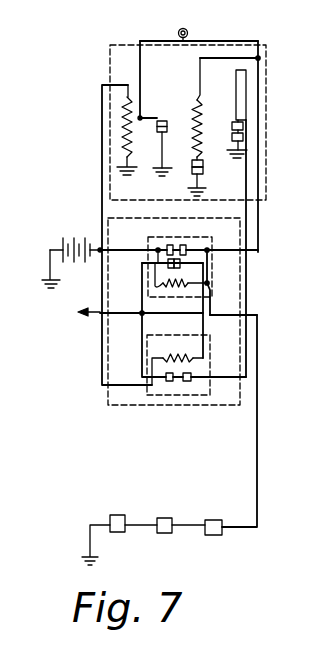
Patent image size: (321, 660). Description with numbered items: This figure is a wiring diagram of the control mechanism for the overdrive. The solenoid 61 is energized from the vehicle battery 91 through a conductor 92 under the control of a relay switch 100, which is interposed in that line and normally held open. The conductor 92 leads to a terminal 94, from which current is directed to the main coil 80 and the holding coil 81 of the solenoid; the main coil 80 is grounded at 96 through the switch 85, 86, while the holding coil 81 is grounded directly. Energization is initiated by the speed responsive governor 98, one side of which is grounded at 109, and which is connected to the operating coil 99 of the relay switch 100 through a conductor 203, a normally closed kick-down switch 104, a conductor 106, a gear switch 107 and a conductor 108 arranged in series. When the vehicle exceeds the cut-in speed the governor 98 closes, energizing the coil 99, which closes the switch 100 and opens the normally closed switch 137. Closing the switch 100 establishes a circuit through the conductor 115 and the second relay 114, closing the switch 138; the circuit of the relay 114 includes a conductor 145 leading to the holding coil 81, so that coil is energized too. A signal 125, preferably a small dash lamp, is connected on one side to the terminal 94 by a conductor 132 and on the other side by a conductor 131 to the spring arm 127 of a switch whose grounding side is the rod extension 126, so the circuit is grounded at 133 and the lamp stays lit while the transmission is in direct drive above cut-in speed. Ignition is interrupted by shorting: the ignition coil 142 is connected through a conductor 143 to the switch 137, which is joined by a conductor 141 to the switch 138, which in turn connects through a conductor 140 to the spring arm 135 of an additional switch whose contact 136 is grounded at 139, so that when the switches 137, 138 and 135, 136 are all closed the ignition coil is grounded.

The solenoid 61 is at (108, 68).
The holding coil 81 is at (123, 122).
The conductor 145 is at (102, 147).
The extension of rod 126 is at (159, 131).
The spring arm 127 is at (163, 120).
The conductor 131 is at (140, 56).
The signal 125 is at (187, 30).
The conductor 132 is at (236, 41).
The terminal 94 is at (260, 58).
The main coil 80 is at (201, 120).
The spring arm 135 is at (244, 124).
The contact 136 is at (244, 136).
The ground connection 139 is at (247, 154).
The switch 85 is at (204, 163).
The switch 86 is at (204, 172).
The ground 96 is at (207, 191).
The ground 133 is at (158, 173).
The battery 91 is at (80, 236).
The conductor 92 is at (259, 237).
The relay switch 100 is at (181, 244).
The switch 137 is at (182, 262).
The operating coil 99 is at (160, 288).
The ignition coil 142 is at (70, 315).
The conductor 143 is at (157, 316).
The conductor 141 is at (142, 344).
The conductor 115 is at (209, 325).
The conductor 140 is at (247, 345).
The second relay 114 is at (187, 355).
The switch 138 is at (180, 383).
The conductor 108 is at (257, 450).
The governor 98 is at (121, 508).
The conductor 106 is at (191, 525).
The gear switch 107 is at (216, 518).
The kick-down switch 104 is at (164, 536).
The conductor 203 is at (137, 527).
The ground 109 is at (84, 556).